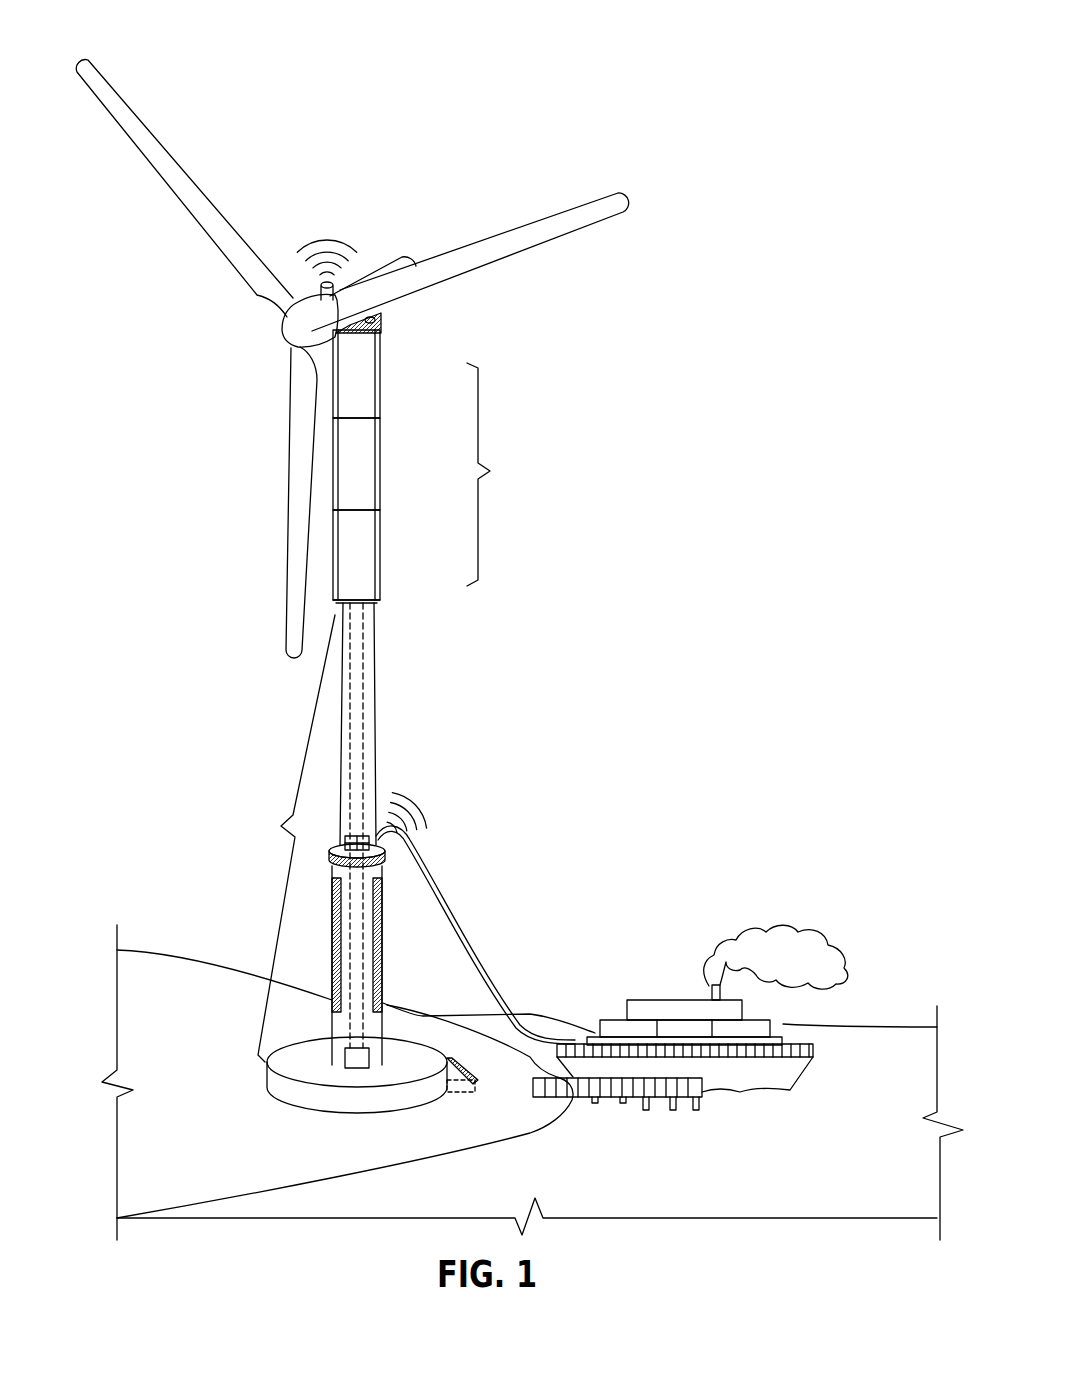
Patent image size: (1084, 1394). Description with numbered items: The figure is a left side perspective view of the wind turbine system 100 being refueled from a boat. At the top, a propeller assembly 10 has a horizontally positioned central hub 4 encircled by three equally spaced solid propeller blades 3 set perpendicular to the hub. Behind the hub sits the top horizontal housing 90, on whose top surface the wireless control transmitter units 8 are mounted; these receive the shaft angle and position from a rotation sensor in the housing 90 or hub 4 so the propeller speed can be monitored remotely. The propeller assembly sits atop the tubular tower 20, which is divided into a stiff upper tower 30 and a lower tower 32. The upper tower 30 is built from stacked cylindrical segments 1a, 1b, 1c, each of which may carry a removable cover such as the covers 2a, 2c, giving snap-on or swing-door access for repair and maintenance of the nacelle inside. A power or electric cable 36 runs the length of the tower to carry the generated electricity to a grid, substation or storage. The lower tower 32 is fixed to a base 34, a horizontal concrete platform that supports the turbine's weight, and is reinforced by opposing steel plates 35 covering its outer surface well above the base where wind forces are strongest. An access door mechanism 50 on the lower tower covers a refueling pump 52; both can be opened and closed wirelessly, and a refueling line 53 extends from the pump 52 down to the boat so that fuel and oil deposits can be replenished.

The wind turbine system 100 is at (542, 116).
The propeller assembly 10 is at (164, 416).
The tubular tower 20 is at (640, 570).
The upper tower 30 is at (534, 421).
The propeller blades 3 is at (138, 112).
The central hub 4 is at (293, 330).
The wireless control transmitter units 8 is at (317, 237).
The top horizontal housing 90 is at (385, 258).
The removable cover 2a is at (382, 328).
The cylindrical segment 1a is at (366, 393).
The cylindrical segment 1b is at (366, 490).
The cylindrical segment 1c is at (366, 565).
The removable cover 2c is at (381, 601).
The power or electric cable 36 is at (374, 692).
The refueling pump 52 is at (376, 830).
The access door mechanism 50 is at (388, 849).
The refueling line 53 is at (488, 983).
The lower tower 32 is at (312, 841).
The opposing steel plates 35 is at (383, 958).
The base 34 is at (343, 1102).